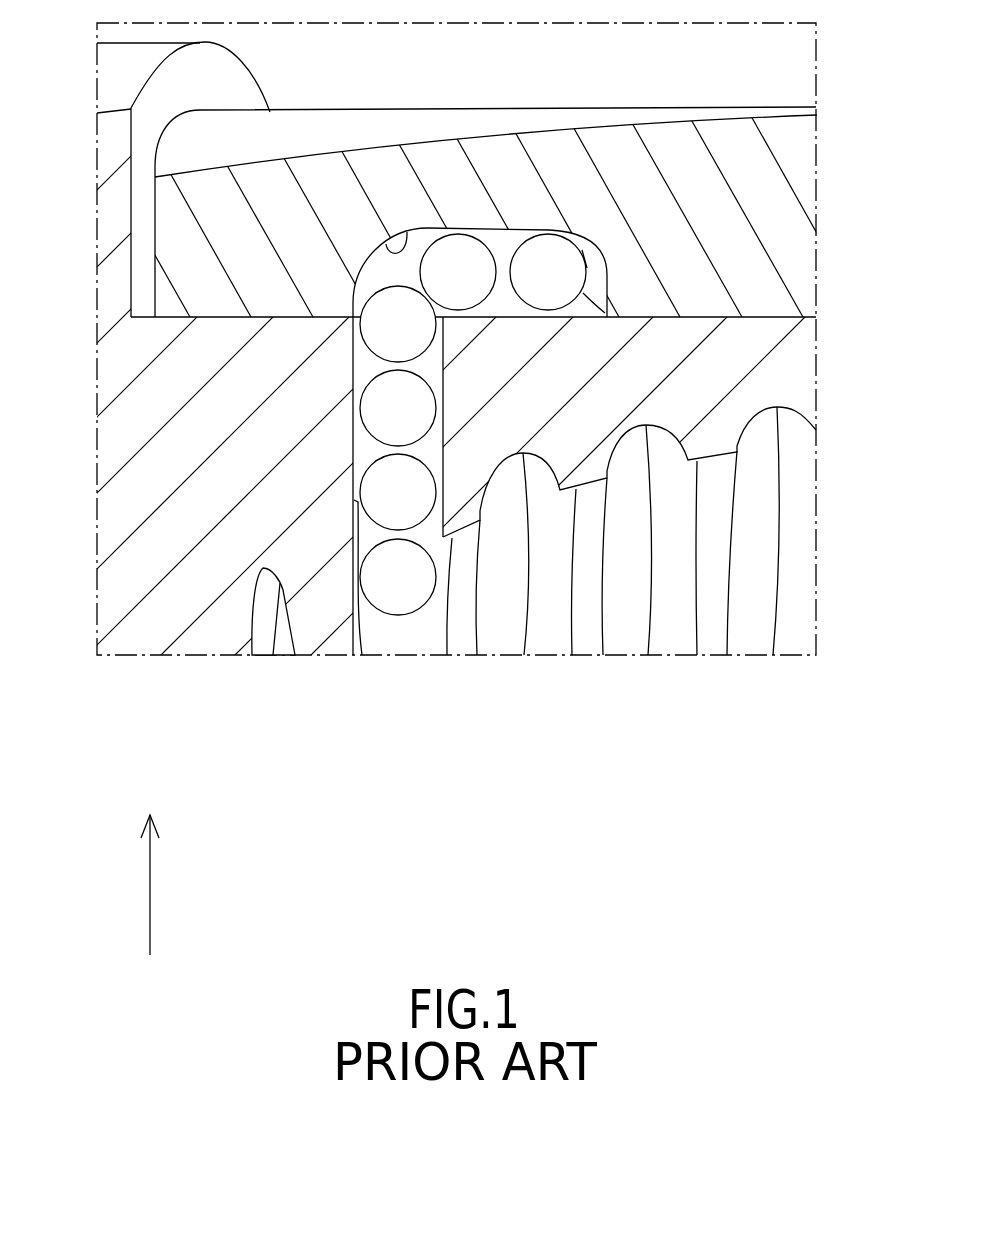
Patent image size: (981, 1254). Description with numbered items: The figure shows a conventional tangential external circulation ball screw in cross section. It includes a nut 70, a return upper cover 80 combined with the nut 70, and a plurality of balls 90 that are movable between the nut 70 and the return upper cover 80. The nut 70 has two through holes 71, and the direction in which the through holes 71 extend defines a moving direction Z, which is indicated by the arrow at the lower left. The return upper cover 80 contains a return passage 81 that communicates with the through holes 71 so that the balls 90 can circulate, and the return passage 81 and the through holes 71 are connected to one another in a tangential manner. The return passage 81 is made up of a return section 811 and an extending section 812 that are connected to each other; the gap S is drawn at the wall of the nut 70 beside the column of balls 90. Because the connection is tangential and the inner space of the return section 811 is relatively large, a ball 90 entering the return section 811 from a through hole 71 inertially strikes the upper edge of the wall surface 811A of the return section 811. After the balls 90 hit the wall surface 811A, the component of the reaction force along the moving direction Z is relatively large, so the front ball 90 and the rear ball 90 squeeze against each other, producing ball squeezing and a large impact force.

The nut 70 is at (805, 352).
The through hole 71 is at (352, 454).
The return upper cover 80 is at (735, 146).
The return passage 81 is at (428, 226).
The return section 811 is at (375, 255).
The wall surface 811A is at (407, 232).
The extending section 812 is at (513, 230).
The ball 90 is at (410, 597).
The gap S is at (352, 364).
The moving direction Z is at (150, 867).